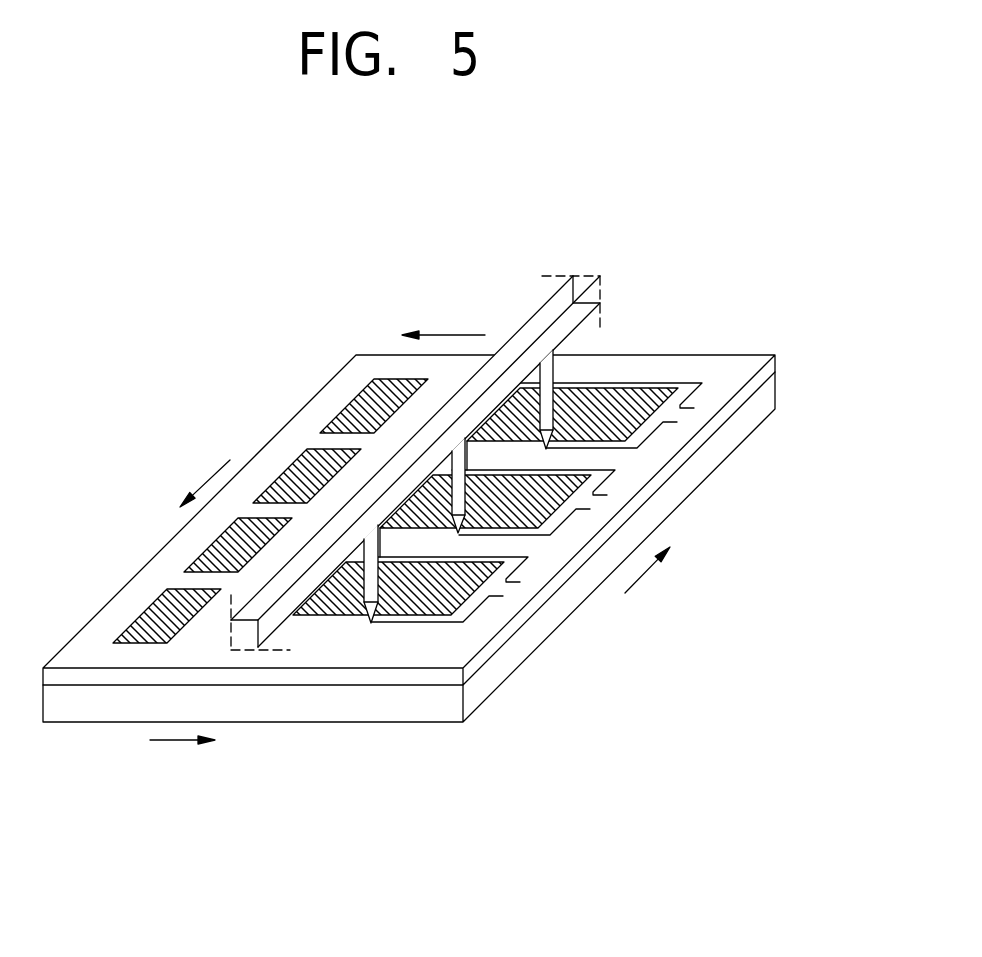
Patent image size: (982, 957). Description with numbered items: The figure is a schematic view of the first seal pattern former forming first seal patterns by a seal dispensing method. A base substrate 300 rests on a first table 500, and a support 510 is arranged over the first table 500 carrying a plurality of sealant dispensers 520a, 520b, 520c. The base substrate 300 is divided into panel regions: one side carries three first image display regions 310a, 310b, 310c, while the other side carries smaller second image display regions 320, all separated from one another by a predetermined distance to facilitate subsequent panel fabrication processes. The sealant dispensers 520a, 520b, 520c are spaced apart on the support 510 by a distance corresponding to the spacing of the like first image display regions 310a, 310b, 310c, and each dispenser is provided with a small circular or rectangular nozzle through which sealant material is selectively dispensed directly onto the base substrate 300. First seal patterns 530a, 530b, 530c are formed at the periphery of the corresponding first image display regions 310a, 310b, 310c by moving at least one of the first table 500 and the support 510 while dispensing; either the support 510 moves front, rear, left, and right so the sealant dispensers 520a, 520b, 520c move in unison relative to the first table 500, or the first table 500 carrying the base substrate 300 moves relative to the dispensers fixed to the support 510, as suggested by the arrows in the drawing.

The support 510 is at (537, 325).
The sealant dispenser 520a is at (540, 400).
The sealant dispenser 520b is at (457, 490).
The sealant dispenser 520c is at (364, 585).
The first seal pattern 530a is at (700, 390).
The first seal pattern 530b is at (572, 515).
The first seal pattern 530c is at (503, 572).
The first image display region 310a is at (660, 427).
The first image display region 310b is at (587, 483).
The first image display region 310c is at (467, 607).
The second image display region 320 is at (145, 620).
The base substrate 300 is at (297, 675).
The first table 500 is at (400, 712).